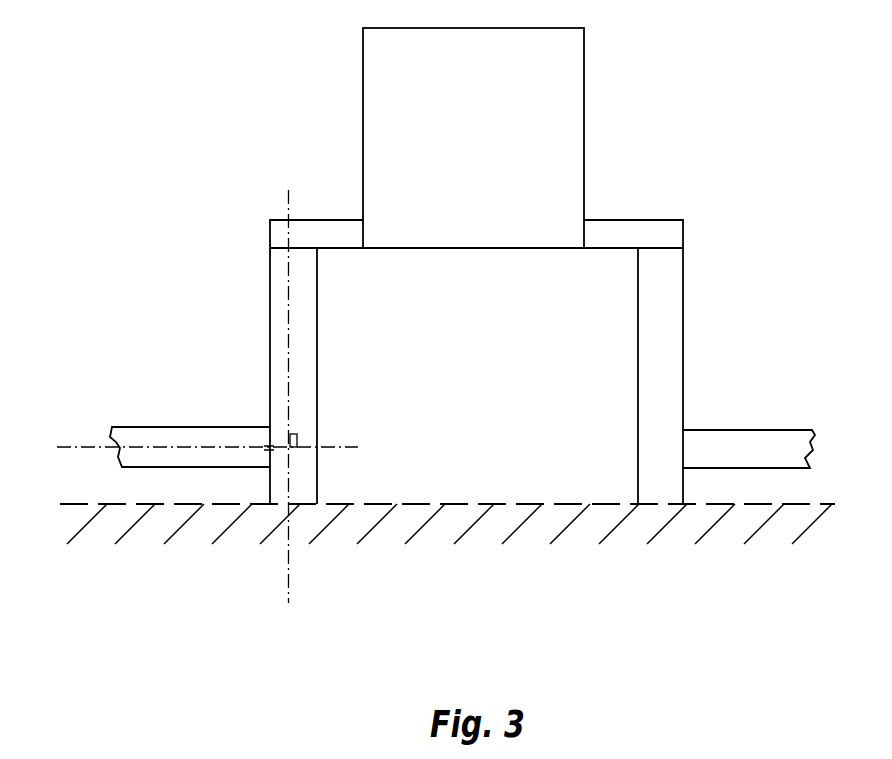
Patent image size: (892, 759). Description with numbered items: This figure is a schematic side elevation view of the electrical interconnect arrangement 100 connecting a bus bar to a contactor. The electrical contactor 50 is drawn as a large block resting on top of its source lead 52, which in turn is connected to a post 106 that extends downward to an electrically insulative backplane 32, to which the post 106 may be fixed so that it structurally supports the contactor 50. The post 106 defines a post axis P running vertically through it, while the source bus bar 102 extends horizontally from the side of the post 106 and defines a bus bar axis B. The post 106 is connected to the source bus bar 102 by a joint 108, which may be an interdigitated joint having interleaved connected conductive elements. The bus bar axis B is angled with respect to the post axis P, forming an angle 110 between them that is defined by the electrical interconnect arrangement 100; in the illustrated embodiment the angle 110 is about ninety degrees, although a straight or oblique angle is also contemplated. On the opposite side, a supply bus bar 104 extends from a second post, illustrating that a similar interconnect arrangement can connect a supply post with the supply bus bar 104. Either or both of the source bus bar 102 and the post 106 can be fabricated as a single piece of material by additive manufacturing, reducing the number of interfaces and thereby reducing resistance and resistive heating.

The electrical contactor 50 is at (473, 127).
The source lead 52 is at (330, 237).
The backplane 32 is at (535, 503).
The electrical interconnect arrangement 100 is at (260, 423).
The source bus bar 102 is at (130, 431).
The supply bus bar 104 is at (738, 438).
The post 106 is at (308, 357).
The joint 108 is at (268, 448).
The angle 110 is at (300, 440).
The bus bar axis B is at (67, 448).
The post axis P is at (290, 597).